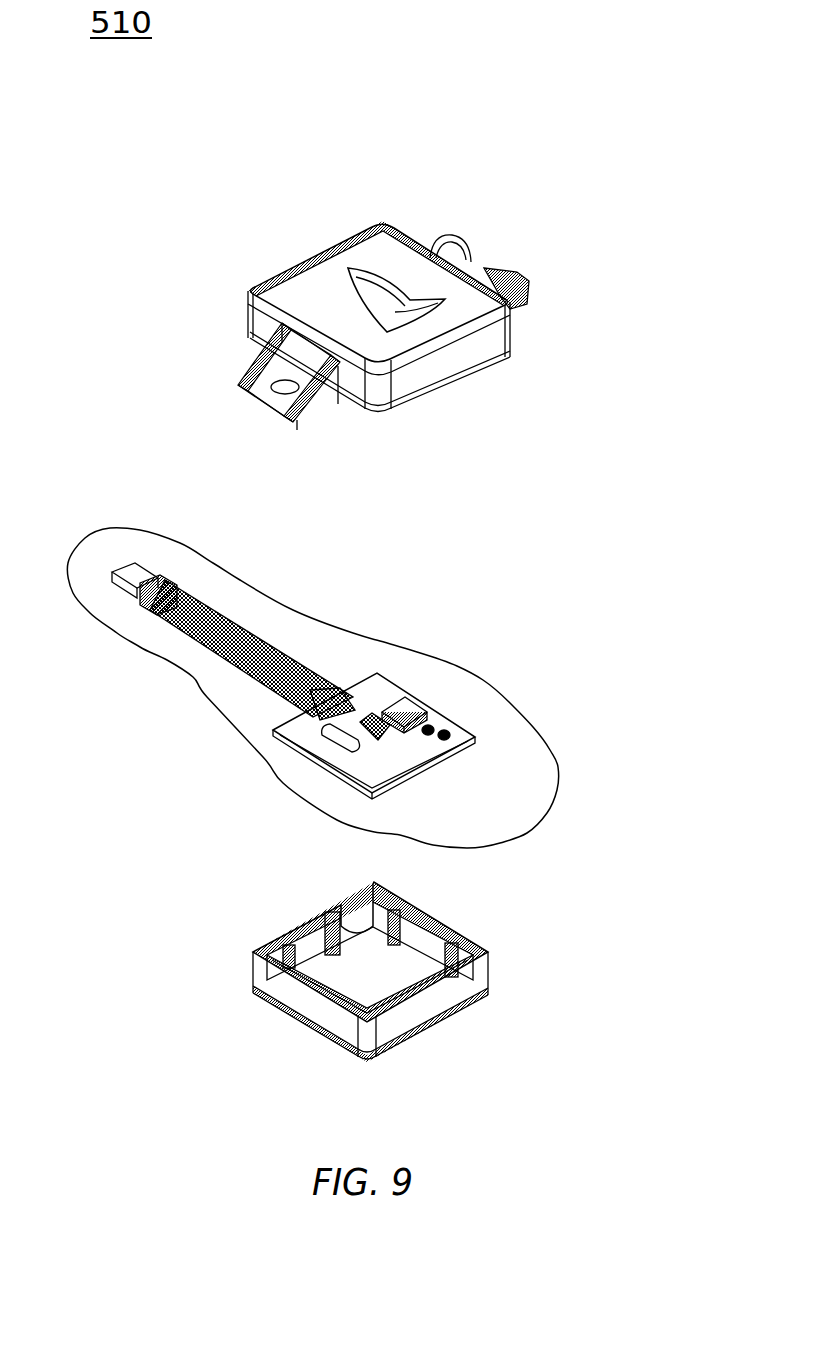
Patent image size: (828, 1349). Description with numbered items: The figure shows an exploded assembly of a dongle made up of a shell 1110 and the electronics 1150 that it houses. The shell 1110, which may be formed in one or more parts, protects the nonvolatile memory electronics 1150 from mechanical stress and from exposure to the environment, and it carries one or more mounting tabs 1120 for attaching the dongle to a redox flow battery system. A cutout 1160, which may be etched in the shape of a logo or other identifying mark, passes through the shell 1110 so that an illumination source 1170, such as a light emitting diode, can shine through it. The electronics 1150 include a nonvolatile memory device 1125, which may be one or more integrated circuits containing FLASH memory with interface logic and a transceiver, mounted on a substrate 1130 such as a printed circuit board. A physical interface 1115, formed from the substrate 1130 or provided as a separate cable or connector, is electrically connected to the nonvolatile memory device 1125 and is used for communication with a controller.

The shell 1110 is at (315, 252).
The physical interface 1115 is at (222, 648).
The mounting tab 1120 is at (522, 277).
The nonvolatile memory device 1125 is at (400, 708).
The substrate 1130 is at (370, 696).
The electronics 1150 is at (557, 760).
The cutout 1160 is at (418, 290).
The illumination source 1170 is at (365, 718).